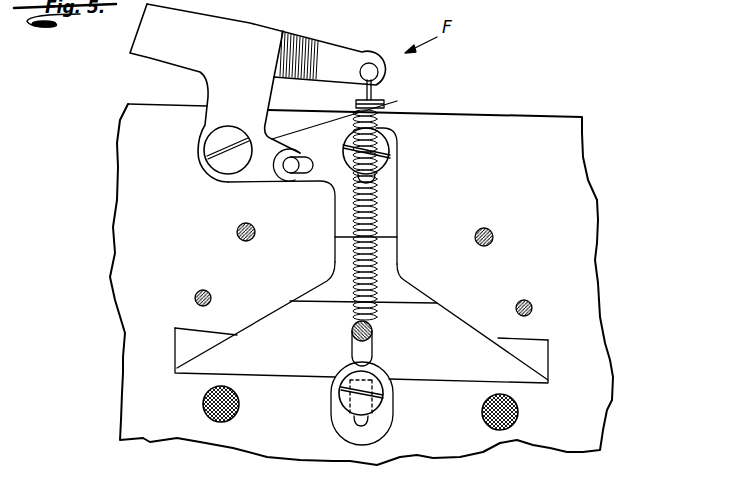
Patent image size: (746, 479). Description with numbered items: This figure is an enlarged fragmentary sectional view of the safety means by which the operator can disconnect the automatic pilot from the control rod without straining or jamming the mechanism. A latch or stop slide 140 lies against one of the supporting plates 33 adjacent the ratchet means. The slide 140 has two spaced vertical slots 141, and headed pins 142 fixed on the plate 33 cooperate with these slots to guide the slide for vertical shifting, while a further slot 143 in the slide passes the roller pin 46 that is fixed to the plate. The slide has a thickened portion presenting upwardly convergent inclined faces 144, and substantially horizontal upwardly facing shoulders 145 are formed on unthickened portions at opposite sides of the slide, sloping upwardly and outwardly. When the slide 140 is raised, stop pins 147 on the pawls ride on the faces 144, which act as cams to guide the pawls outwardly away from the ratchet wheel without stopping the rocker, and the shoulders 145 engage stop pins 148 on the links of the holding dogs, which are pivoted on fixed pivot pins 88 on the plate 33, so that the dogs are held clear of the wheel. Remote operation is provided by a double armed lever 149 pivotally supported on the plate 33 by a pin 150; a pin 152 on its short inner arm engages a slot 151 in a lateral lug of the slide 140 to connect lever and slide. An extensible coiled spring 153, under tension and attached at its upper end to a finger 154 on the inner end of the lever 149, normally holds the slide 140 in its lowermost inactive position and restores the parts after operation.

The supporting plate 33 is at (588, 221).
The roller pin 46 is at (374, 331).
The fixed pivot pin 88 is at (203, 404).
The stop slide 140 is at (383, 215).
The vertical slot 141 is at (372, 178).
The headed pin 142 is at (389, 150).
The slot 143 is at (374, 350).
The inclined face 144 is at (196, 352).
The shoulder 145 is at (218, 328).
The stop pin 147 is at (238, 235).
The stop pin 148 is at (204, 291).
The double armed lever 149 is at (263, 93).
The pin 150 is at (224, 166).
The slot 151 is at (302, 173).
The pin 152 is at (284, 167).
The coiled spring 153 is at (382, 106).
The finger 154 is at (338, 52).